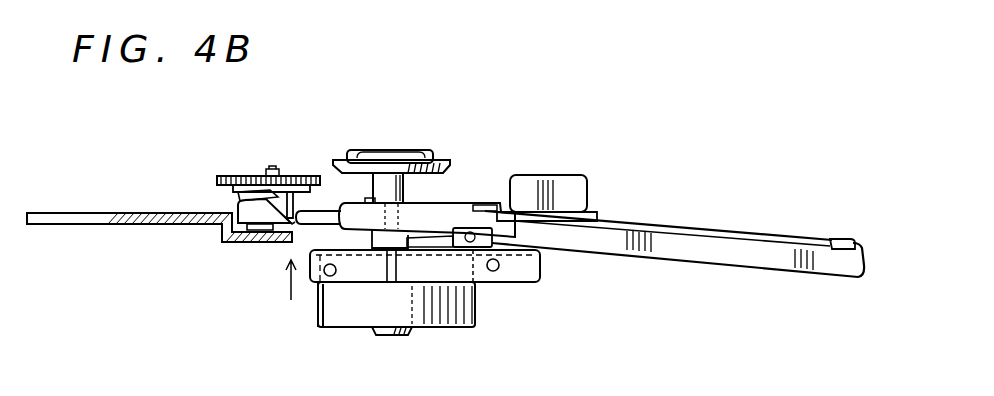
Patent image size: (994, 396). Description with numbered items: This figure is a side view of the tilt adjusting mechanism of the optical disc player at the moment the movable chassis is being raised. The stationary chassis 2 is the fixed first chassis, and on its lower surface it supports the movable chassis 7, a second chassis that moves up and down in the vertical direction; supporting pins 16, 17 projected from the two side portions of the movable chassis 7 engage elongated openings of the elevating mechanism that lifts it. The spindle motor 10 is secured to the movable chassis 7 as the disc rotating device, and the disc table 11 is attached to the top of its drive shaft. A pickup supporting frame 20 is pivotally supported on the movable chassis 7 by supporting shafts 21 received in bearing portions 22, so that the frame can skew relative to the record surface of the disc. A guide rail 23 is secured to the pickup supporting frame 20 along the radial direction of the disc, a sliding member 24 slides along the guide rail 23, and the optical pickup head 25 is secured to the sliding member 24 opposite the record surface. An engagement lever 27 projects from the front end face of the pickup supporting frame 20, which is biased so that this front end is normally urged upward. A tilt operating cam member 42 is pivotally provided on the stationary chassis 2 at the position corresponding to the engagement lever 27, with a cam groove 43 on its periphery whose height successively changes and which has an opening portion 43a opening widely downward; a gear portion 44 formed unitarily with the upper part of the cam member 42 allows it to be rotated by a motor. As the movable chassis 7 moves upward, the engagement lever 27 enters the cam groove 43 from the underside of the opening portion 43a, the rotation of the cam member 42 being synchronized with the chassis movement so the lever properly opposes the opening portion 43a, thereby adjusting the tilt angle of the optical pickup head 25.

The stationary chassis 2 is at (124, 212).
The movable chassis 7 is at (541, 263).
The spindle motor 10 is at (359, 308).
The disc table 11 is at (425, 157).
The supporting pin 16 is at (319, 300).
The supporting pin 17 is at (500, 273).
The pickup supporting frame 20 is at (709, 255).
The supporting shaft 21 is at (476, 248).
The bearing portion 22 is at (471, 232).
The guide rail 23 is at (785, 238).
The sliding member 24 is at (600, 210).
The optical pickup head 25 is at (566, 186).
The engagement lever 27 is at (327, 210).
The tilt operating cam member 42 is at (247, 215).
The cam groove 43 is at (259, 173).
The opening portion 43a is at (296, 234).
The gear portion 44 is at (293, 175).